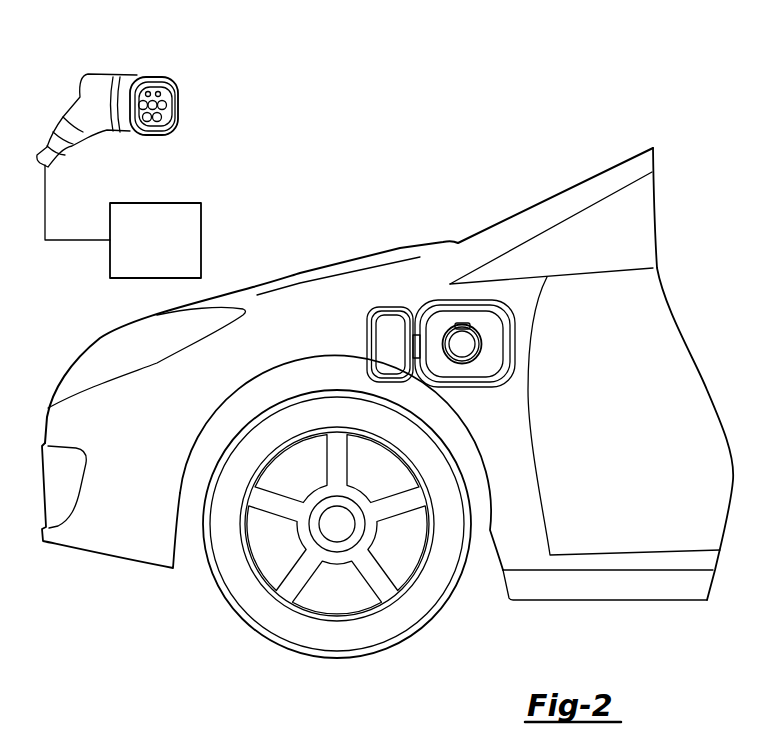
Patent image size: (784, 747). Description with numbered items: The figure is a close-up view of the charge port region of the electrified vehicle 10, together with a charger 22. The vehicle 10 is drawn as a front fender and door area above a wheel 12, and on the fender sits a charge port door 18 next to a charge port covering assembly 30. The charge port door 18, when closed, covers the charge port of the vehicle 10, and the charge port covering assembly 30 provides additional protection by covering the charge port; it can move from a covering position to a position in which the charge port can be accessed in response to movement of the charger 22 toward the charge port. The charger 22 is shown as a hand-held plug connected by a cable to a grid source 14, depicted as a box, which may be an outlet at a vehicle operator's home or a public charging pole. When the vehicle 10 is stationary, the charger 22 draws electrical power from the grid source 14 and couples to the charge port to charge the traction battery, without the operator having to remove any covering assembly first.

The vehicle 10 is at (397, 277).
The wheel 12 is at (337, 658).
The grid source 14 is at (201, 240).
The charge port door 18 is at (386, 333).
The charger 22 is at (133, 78).
The charge port covering assembly 30 is at (483, 345).